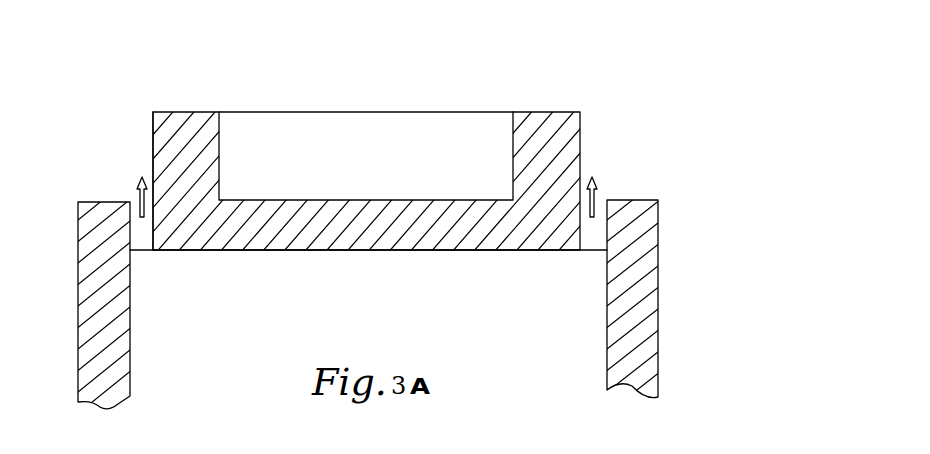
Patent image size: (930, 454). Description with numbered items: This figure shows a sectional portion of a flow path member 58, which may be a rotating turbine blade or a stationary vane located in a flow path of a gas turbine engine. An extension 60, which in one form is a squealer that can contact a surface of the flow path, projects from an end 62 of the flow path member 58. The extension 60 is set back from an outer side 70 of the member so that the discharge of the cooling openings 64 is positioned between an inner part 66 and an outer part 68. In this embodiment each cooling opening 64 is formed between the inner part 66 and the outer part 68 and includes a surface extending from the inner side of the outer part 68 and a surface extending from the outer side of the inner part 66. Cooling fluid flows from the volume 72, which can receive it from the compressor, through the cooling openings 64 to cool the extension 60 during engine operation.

The flow path member 58 is at (356, 127).
The extension 60 is at (553, 135).
The end 62 is at (697, 113).
The cooling openings 64 is at (134, 208).
The inner part 66 is at (152, 148).
The outer part 68 is at (78, 285).
The outer side 70 is at (659, 261).
The volume 72 is at (548, 317).